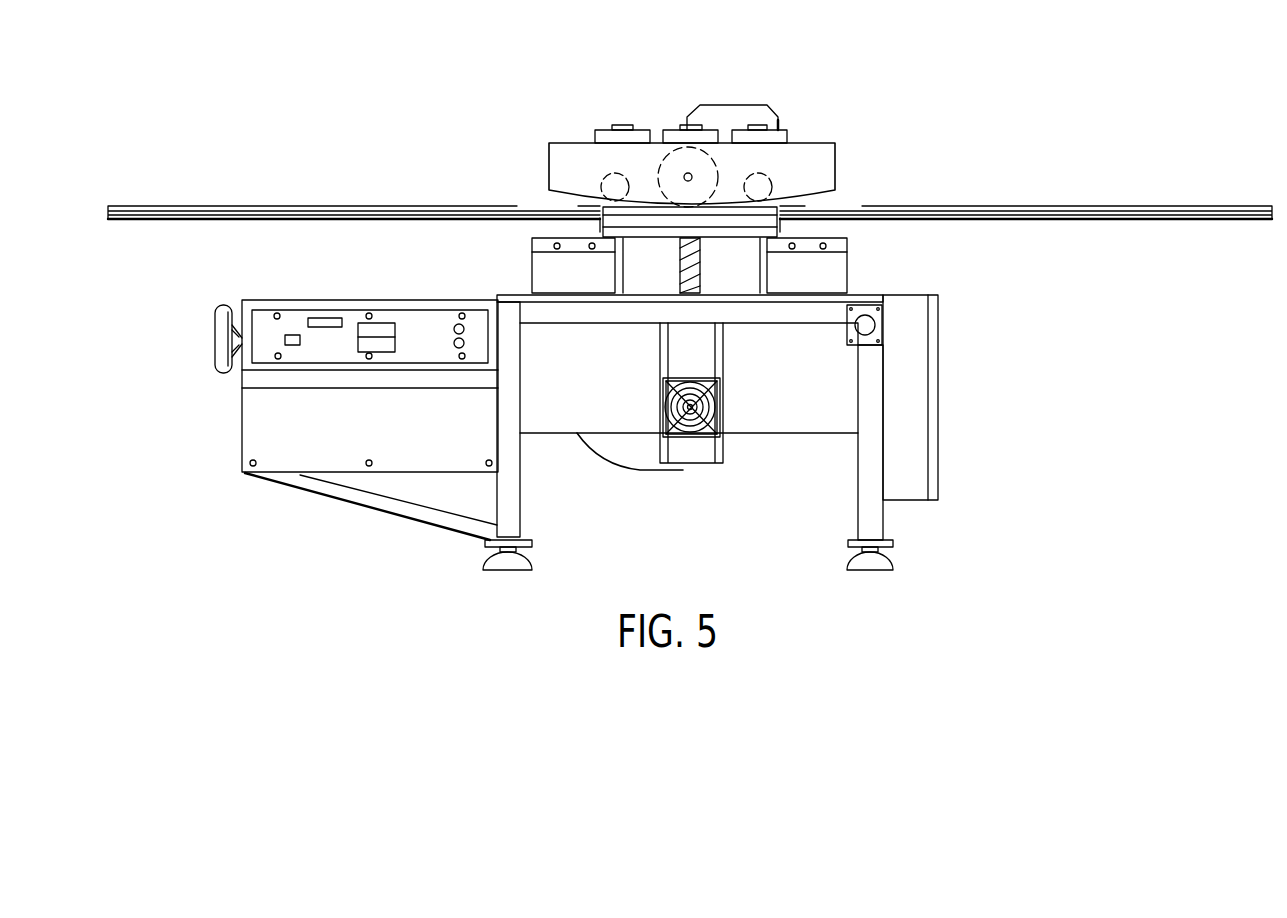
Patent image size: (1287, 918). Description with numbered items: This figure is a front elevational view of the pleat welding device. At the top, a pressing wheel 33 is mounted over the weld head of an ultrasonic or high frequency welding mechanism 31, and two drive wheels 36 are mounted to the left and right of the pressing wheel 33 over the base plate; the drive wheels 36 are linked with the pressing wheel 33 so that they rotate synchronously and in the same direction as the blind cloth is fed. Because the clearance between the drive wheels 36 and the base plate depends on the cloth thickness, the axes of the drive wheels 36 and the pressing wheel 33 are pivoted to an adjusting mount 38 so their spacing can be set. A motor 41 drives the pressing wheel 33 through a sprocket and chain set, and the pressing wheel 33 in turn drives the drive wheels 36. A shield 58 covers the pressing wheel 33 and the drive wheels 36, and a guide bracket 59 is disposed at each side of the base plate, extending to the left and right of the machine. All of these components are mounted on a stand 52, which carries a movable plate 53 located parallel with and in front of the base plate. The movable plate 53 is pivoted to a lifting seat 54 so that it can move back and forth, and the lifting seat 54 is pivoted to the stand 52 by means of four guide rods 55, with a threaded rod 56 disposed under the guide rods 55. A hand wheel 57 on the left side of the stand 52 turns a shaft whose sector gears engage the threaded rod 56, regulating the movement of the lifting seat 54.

The welding mechanism 31 is at (697, 358).
The pressing wheel 33 is at (670, 170).
The drive wheels 36 is at (608, 188).
The adjusting mount 38 is at (753, 128).
The motor 41 is at (733, 105).
The stand 52 is at (873, 528).
The movable plate 53 is at (805, 212).
The lifting seat 54 is at (727, 233).
The guide rods 55 is at (617, 262).
The threaded rod 56 is at (680, 262).
The hand wheel 57 is at (220, 312).
The shield 58 is at (807, 153).
The guide brackets 59 is at (238, 218).